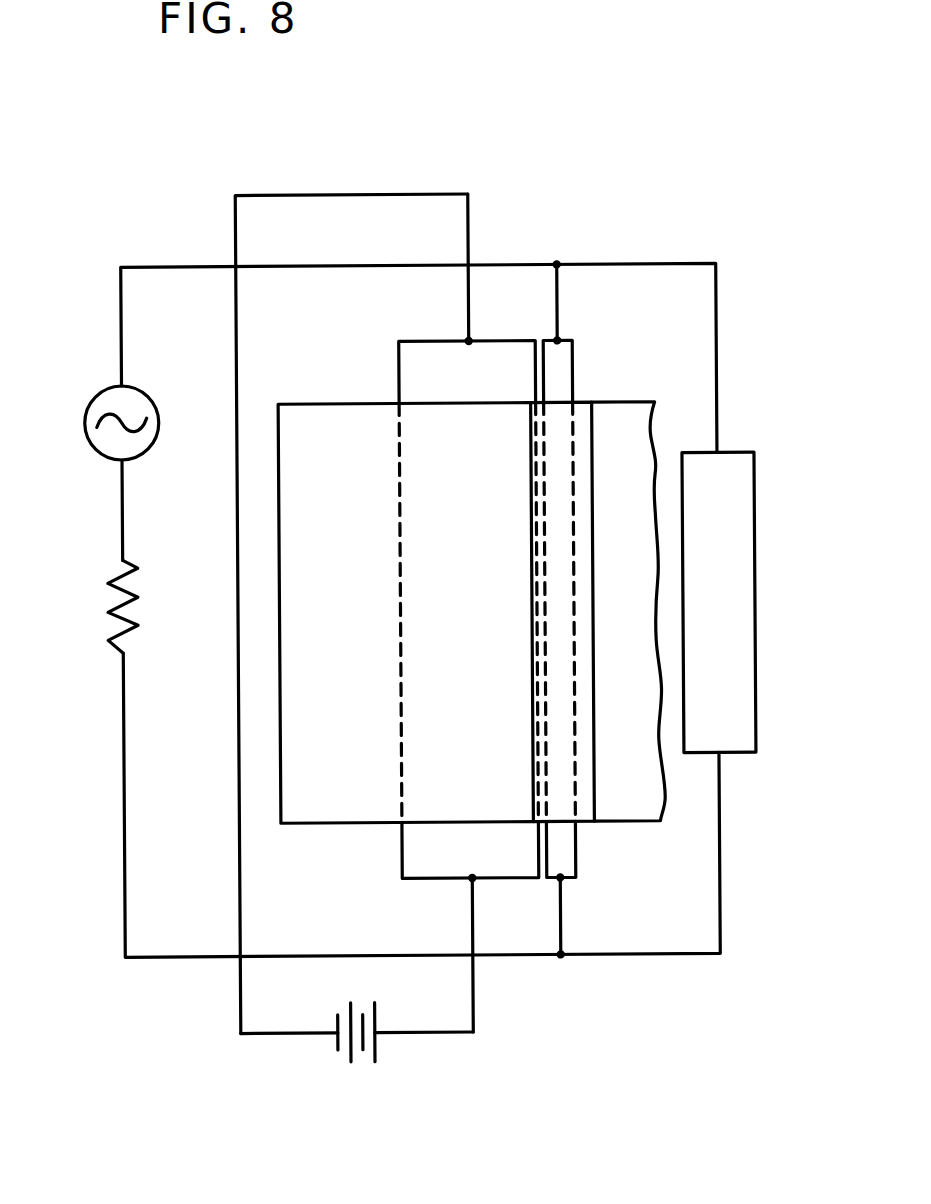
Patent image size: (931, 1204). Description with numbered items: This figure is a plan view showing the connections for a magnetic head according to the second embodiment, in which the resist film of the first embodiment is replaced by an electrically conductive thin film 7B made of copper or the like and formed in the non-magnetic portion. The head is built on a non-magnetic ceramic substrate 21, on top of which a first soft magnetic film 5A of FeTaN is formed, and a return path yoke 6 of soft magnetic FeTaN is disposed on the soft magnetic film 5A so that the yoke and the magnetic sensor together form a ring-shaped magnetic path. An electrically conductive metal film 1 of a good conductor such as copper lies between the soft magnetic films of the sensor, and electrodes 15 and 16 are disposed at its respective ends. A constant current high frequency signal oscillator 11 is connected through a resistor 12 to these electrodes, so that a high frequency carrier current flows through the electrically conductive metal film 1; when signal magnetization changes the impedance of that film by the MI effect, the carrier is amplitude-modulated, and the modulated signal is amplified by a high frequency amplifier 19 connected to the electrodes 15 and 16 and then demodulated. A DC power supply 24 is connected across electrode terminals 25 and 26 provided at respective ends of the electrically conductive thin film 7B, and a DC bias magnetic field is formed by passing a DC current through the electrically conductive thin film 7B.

The electrically conductive metal film 1 is at (567, 374).
The first soft magnetic film 5A is at (588, 454).
The return path yoke 6 is at (311, 417).
The electrically conductive thin film 7B is at (415, 370).
The constant current high frequency signal oscillator 11 is at (98, 394).
The resistor 12 is at (110, 578).
The electrode 15 is at (560, 881).
The electrode 16 is at (559, 339).
The high frequency amplifier 19 is at (753, 484).
The non-magnetic ceramic substrate 21 is at (644, 454).
The DC power supply 24 is at (380, 1046).
The electrode terminal 25 is at (468, 881).
The electrode terminal 26 is at (470, 338).